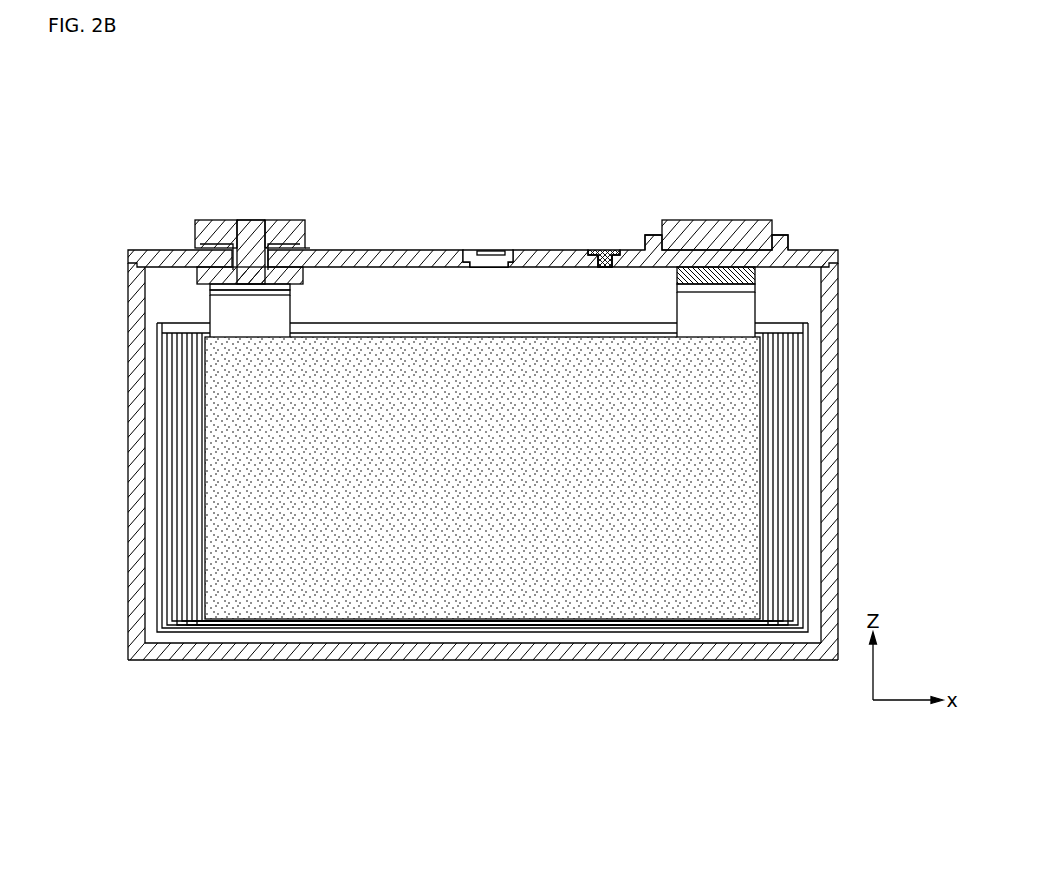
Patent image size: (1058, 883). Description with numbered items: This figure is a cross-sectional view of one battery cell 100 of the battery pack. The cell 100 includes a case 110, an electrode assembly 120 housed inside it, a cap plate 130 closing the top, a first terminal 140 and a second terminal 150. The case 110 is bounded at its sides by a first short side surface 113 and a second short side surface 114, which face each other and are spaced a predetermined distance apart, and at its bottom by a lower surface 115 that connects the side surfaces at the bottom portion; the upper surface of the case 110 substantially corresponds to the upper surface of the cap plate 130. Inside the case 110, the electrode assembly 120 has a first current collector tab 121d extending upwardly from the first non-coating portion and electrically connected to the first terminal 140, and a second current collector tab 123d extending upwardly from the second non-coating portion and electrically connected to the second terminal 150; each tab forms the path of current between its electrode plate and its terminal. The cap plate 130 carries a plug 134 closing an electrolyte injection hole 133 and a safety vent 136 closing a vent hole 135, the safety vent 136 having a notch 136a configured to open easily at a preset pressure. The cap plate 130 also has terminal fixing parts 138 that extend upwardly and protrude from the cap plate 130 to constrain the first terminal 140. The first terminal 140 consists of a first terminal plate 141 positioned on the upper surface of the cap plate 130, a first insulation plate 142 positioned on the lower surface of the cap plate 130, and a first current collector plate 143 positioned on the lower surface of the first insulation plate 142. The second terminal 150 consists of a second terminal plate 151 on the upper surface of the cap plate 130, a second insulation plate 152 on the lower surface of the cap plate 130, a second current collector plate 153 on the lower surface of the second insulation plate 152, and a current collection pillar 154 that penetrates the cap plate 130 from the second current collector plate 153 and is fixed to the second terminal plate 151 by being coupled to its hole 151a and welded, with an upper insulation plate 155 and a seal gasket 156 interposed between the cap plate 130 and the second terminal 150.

The battery cell 100 is at (880, 163).
The case 110 is at (479, 670).
The first short side surface 113 is at (127, 452).
The second short side surface 114 is at (840, 452).
The lower surface 115 is at (622, 663).
The electrode assembly 120 is at (340, 645).
The first current collector tab 121d is at (750, 312).
The second current collector tab 123d is at (273, 310).
The cap plate 130 is at (402, 252).
The electrolyte injection hole 133 is at (607, 268).
The plug 134 is at (603, 250).
The vent hole 135 is at (484, 268).
The safety vent 136 is at (471, 250).
The notch 136a is at (497, 252).
The terminal fixing part 138 is at (655, 235).
The first terminal 140 is at (738, 210).
The first terminal plate 141 is at (692, 225).
The first insulation plate 142 is at (755, 275).
The first current collector plate 143 is at (755, 286).
The second terminal 150 is at (261, 200).
The second terminal plate 151 is at (293, 225).
The hole 151a is at (237, 220).
The second insulation plate 152 is at (197, 274).
The second current collector plate 153 is at (292, 293).
The current collection pillar 154 is at (250, 227).
The upper insulation plate 155 is at (307, 250).
The seal gasket 156 is at (200, 238).